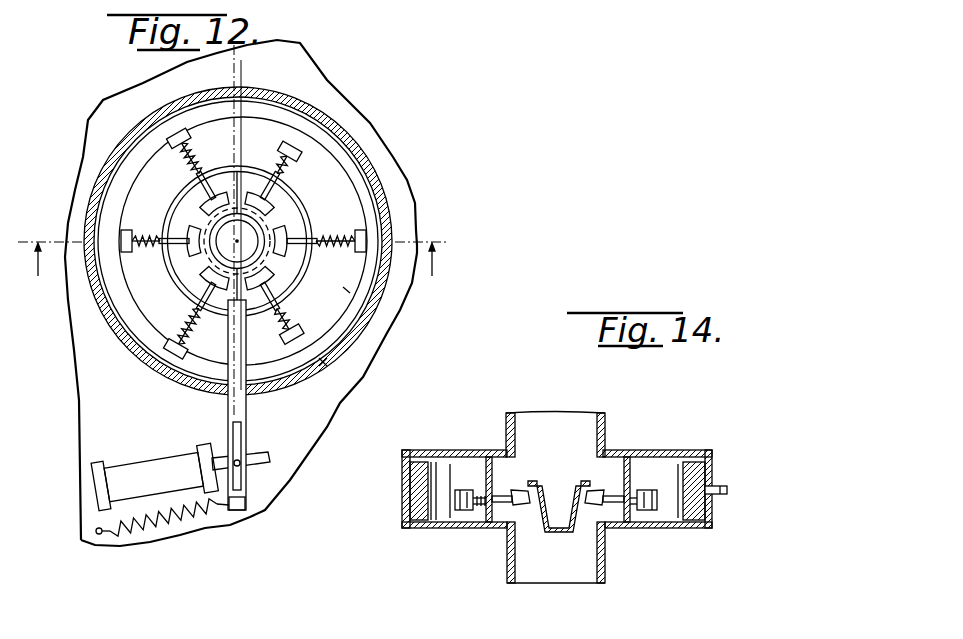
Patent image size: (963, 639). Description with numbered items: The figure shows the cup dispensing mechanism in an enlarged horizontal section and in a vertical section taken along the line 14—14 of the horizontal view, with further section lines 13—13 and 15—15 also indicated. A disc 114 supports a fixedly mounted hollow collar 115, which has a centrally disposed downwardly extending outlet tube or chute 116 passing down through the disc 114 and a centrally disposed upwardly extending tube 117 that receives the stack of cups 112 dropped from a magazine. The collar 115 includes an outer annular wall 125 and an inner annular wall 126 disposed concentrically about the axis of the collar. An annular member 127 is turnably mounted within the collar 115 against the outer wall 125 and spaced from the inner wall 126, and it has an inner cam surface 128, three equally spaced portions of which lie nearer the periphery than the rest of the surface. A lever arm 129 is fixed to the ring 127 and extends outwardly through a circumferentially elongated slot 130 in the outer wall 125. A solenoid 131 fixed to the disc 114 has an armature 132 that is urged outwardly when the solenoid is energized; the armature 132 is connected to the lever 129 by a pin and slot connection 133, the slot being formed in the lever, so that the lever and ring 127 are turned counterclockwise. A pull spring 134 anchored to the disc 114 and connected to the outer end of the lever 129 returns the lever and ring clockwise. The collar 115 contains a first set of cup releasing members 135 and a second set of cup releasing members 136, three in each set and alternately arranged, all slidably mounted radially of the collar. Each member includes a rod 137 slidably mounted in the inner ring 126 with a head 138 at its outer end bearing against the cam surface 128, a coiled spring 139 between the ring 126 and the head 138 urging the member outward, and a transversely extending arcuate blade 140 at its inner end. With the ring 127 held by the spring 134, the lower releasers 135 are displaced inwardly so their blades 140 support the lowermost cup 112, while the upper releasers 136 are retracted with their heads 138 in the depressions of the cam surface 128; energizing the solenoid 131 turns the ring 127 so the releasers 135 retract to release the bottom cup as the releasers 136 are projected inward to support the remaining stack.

In FIG. 12, the section line 13— 13 is at (243, 58).
In FIG. 12, the section line 14— 14 is at (233, 78).
In FIG. 12, the section line 15— 15 is at (233, 271).
In FIG. 14, the cup 112 is at (560, 517).
In FIG. 12, the disc 114 is at (330, 405).
In FIG. 12, the hollow collar 115 is at (385, 165).
In FIG. 14, the hollow collar 115 is at (716, 448).
In FIG. 14, the outlet tube or chute 116 is at (517, 580).
In FIG. 14, the tube 117 is at (607, 428).
In FIG. 12, the outer annular wall 125 is at (392, 213).
In FIG. 12, the inner annular wall 126 is at (296, 226).
In FIG. 12, the annular member 127 is at (322, 148).
In FIG. 14, the annular member 127 is at (420, 462).
In FIG. 12, the inner cam surface 128 is at (345, 288).
In FIG. 14, the inner cam surface 128 is at (678, 505).
In FIG. 12, the lever arm 129 is at (260, 505).
In FIG. 14, the lever arm 129 is at (722, 490).
In FIG. 12, the circumferentially elongated slot 130 is at (323, 366).
In FIG. 14, the circumferentially elongated slot 130 is at (712, 486).
In FIG. 12, the solenoid 131 is at (150, 468).
In FIG. 12, the armature 132 is at (273, 460).
In FIG. 12, the pin and slot connection 133 is at (247, 443).
In FIG. 12, the pull spring 134 is at (185, 518).
In FIG. 12, the cup releasing member 135 is at (270, 197).
In FIG. 14, the cup releasing member 135 is at (508, 508).
In FIG. 12, the cup releasing member 136 is at (195, 195).
In FIG. 12, the rod 137 is at (246, 188).
In FIG. 12, the head 138 is at (243, 214).
In FIG. 14, the head 138 is at (458, 512).
In FIG. 12, the coiled spring 139 is at (178, 152).
In FIG. 12, the arcuate blade 140 is at (193, 212).
In FIG. 14, the arcuate blade 140 is at (520, 494).